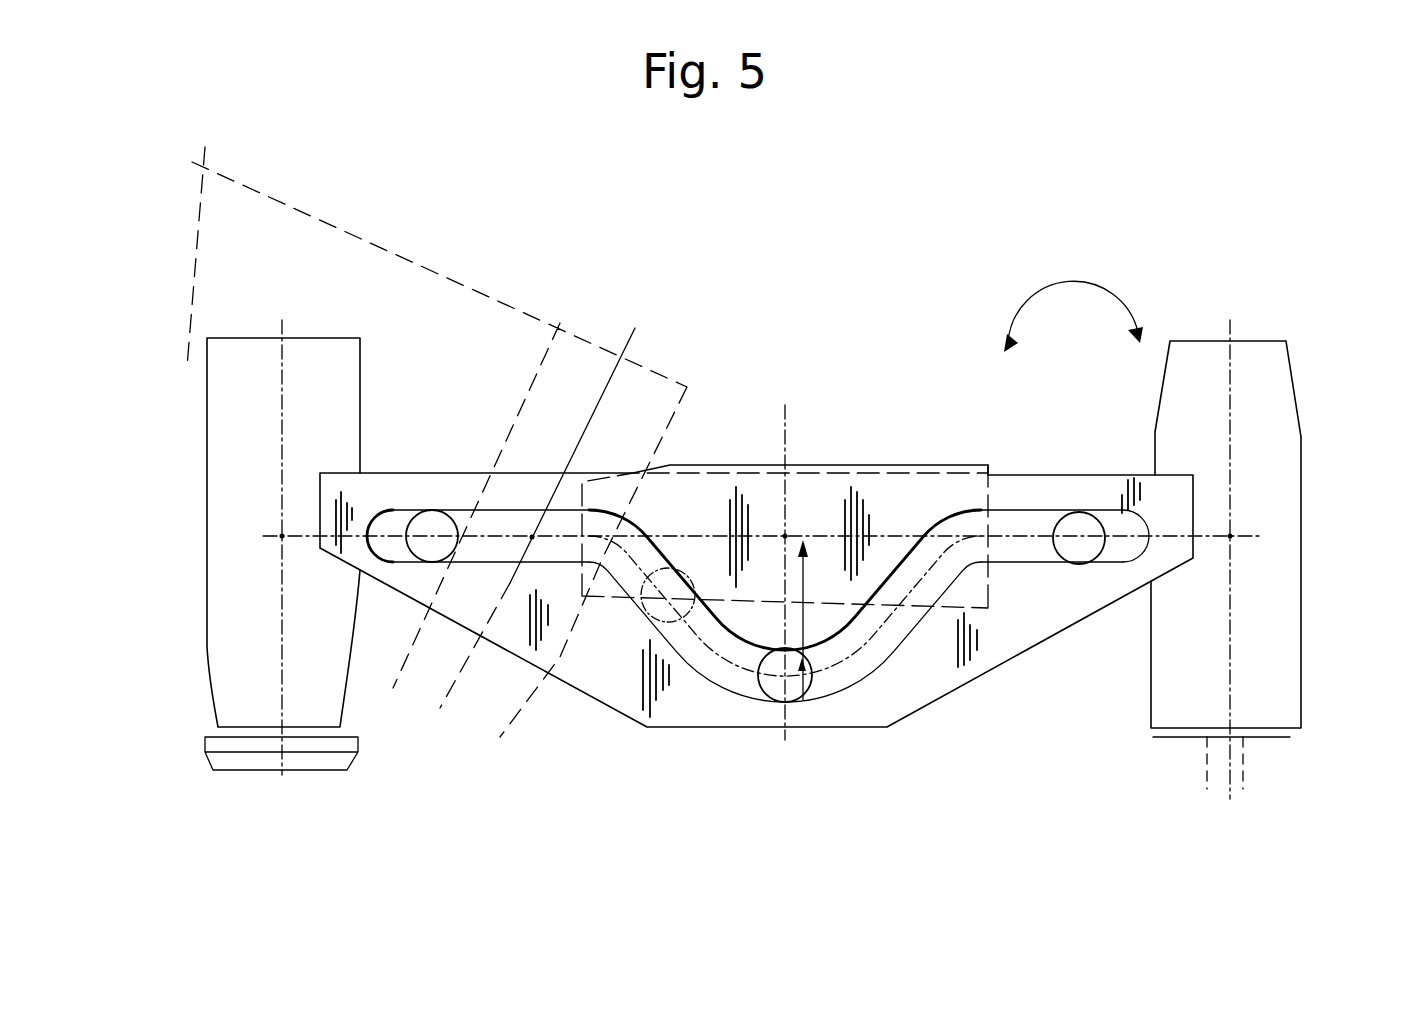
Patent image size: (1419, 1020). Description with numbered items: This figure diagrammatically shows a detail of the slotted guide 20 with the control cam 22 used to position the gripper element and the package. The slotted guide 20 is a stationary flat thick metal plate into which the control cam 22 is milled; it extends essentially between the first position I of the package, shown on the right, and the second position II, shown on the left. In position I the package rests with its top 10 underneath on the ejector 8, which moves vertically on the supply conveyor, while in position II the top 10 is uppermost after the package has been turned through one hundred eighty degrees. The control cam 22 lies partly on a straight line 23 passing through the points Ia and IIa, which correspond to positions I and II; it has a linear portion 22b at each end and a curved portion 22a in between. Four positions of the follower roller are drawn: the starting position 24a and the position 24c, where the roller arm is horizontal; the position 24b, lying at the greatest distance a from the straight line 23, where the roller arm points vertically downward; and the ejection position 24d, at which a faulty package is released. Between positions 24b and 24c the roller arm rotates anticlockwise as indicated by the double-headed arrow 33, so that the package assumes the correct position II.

The ejector 8 is at (1180, 743).
The top 10 is at (327, 338).
The slotted guide 20 is at (1048, 483).
The control cam 22 is at (880, 670).
The curved portion 22a is at (707, 683).
The linear portion 22b is at (468, 562).
The straight line 23 is at (868, 512).
The starting position of follower roller 24a is at (1082, 552).
The position of follower roller 24b is at (781, 697).
The position of follower roller 24c is at (422, 547).
The ejection position 24d is at (668, 567).
The double-headed arrow 33 is at (1070, 288).
The distance a is at (803, 618).
The first position I is at (1257, 630).
The point Ia is at (1230, 537).
The second position II is at (233, 657).
The point IIa is at (500, 737).